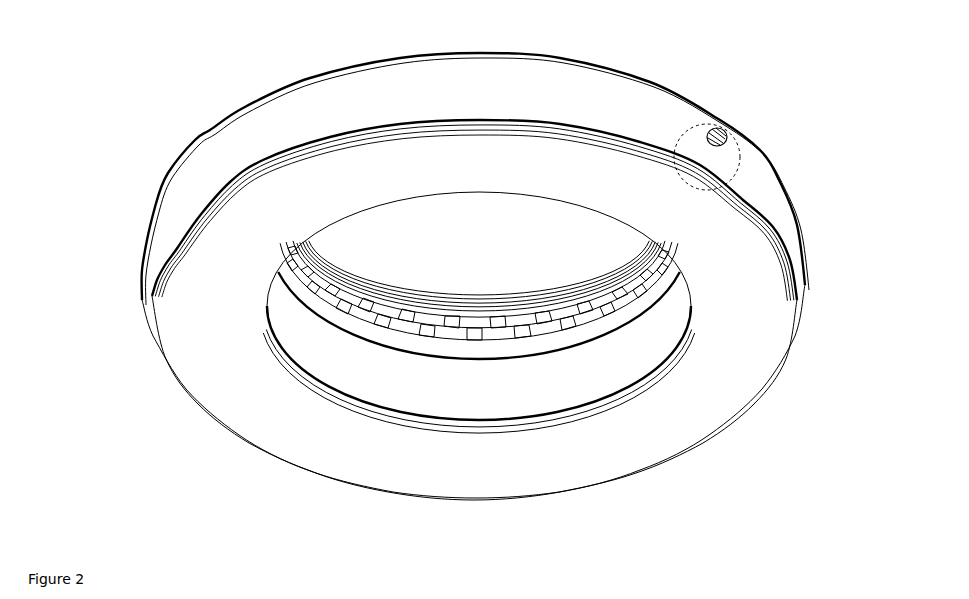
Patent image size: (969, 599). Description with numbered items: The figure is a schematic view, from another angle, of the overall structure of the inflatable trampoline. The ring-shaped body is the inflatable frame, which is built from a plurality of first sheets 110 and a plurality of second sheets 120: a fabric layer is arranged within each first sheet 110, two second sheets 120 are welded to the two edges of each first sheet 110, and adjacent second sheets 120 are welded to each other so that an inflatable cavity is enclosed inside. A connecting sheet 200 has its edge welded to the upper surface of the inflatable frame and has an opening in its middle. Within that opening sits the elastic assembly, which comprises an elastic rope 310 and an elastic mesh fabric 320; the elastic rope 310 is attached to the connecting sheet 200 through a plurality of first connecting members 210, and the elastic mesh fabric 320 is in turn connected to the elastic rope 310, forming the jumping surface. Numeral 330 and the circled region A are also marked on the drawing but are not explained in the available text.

The first sheet 110 is at (287, 120).
The second sheet 120 is at (625, 142).
The connecting sheet 200 is at (583, 336).
The first connecting member 210 is at (290, 290).
The elastic rope 310 is at (672, 286).
The elastic mesh fabric 320 is at (383, 232).
The concentric rings 330 is at (646, 250).
The detail region A is at (747, 157).